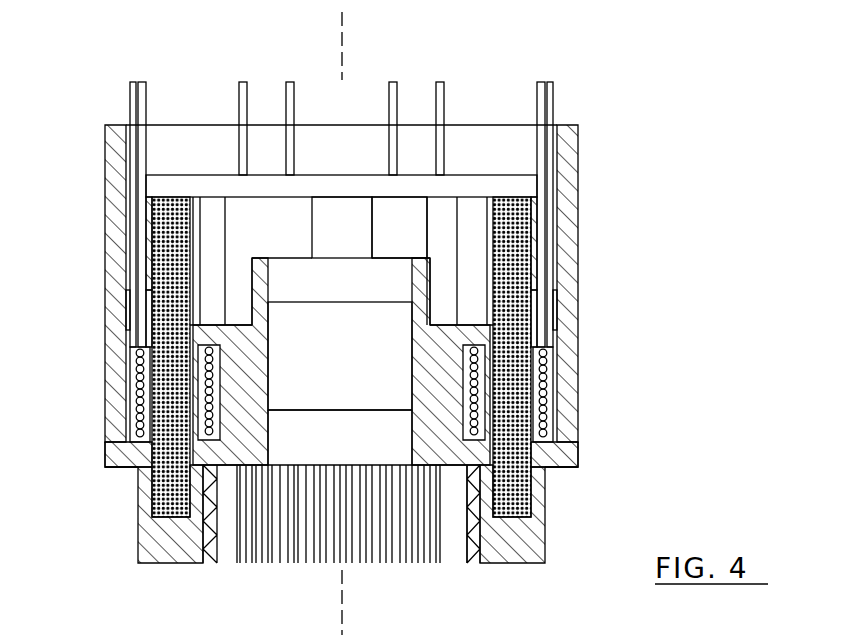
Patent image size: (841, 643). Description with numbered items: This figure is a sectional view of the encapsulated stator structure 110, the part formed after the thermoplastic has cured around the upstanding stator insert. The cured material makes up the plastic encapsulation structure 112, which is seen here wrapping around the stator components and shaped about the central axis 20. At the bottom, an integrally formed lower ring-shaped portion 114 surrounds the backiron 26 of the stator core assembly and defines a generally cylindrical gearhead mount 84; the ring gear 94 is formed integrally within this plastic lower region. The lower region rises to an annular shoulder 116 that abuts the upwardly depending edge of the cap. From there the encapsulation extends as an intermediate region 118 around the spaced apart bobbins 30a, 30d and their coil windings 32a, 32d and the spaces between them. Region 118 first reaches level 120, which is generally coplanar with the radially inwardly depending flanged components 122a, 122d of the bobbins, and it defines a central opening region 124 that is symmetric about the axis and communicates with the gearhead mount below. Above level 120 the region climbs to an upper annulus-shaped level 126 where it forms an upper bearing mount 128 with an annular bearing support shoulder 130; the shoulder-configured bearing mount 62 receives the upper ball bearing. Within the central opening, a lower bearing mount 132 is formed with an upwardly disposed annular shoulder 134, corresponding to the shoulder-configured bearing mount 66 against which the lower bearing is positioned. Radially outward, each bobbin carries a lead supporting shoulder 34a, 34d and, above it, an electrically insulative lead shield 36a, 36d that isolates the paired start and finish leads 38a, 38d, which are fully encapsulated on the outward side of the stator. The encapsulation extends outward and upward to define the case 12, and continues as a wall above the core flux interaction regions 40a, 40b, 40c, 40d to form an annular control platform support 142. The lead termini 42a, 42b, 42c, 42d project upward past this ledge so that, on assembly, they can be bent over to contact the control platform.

The case 12 is at (568, 157).
The axis 20 is at (350, 22).
The backiron 26 is at (513, 507).
The bobbin 30a is at (554, 447).
The bobbin 30d is at (128, 447).
The stator coil winding 32a is at (548, 392).
The stator coil winding 32d is at (136, 392).
The lead supporting shoulder 34a is at (540, 300).
The lead supporting shoulder 34d is at (146, 298).
The lead shield 36a is at (540, 228).
The lead shield 36d is at (146, 247).
The start and finish leads 38a is at (556, 290).
The start and finish leads 38d is at (127, 292).
The core flux interaction region 40a is at (517, 247).
The core flux interaction region 40b is at (445, 215).
The core flux interaction region 40c is at (295, 215).
The core flux interaction region 40d is at (165, 225).
The lead terminus 42a is at (554, 76).
The lead terminus 42b is at (420, 76).
The lead terminus 42c is at (268, 76).
The lead terminus 42d is at (128, 76).
The bearing mount 62 is at (417, 300).
The bearing mount 66 is at (300, 398).
The gearhead mount 84 is at (473, 566).
The ring gear 94 is at (296, 563).
The encapsulated stator structure 110 is at (582, 470).
The plastic encapsulation structure 112 is at (106, 477).
The lower ring-shaped portion 114 is at (513, 545).
The annular shoulder 116 is at (140, 502).
The intermediate region 118 is at (440, 358).
The level 120 is at (450, 320).
The flanged component 122a is at (468, 320).
The flanged component 122d is at (213, 320).
The central opening region 124 is at (340, 356).
The upper annulus-shaped level 126 is at (437, 266).
The upper bearing mount 128 is at (350, 254).
The annular bearing support shoulder 130 is at (268, 296).
The lower bearing mount 132 is at (362, 394).
The annular shoulder 134 is at (413, 415).
The control platform support 142 is at (148, 190).